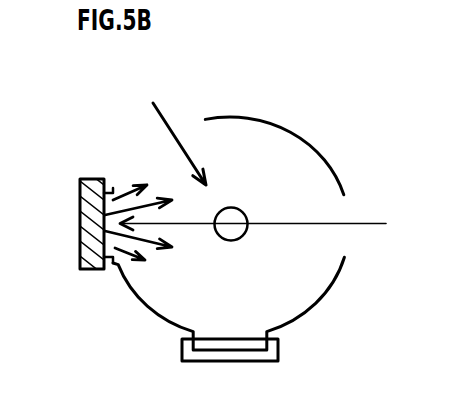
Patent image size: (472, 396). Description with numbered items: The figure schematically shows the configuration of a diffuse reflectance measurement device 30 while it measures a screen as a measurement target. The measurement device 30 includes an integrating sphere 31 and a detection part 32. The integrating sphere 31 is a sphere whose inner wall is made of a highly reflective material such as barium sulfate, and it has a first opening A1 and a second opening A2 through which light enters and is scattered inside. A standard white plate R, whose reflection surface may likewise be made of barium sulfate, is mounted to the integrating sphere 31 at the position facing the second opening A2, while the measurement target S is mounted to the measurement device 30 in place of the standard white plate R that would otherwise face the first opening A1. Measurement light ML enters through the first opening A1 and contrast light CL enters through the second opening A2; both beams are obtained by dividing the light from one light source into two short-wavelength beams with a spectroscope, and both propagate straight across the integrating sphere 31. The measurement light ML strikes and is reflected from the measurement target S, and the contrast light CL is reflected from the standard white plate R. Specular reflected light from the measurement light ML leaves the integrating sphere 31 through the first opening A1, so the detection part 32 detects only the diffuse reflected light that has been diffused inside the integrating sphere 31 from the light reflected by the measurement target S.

The diffuse reflectance measurement device 30 is at (268, 200).
The integrating sphere 31 is at (113, 190).
The detection part 32 is at (237, 208).
The measurement target S is at (80, 257).
The standard white plate R is at (279, 348).
The measurement light ML is at (364, 223).
The contrast light CL is at (157, 111).
The first opening A1 is at (343, 259).
The second opening A2 is at (212, 117).